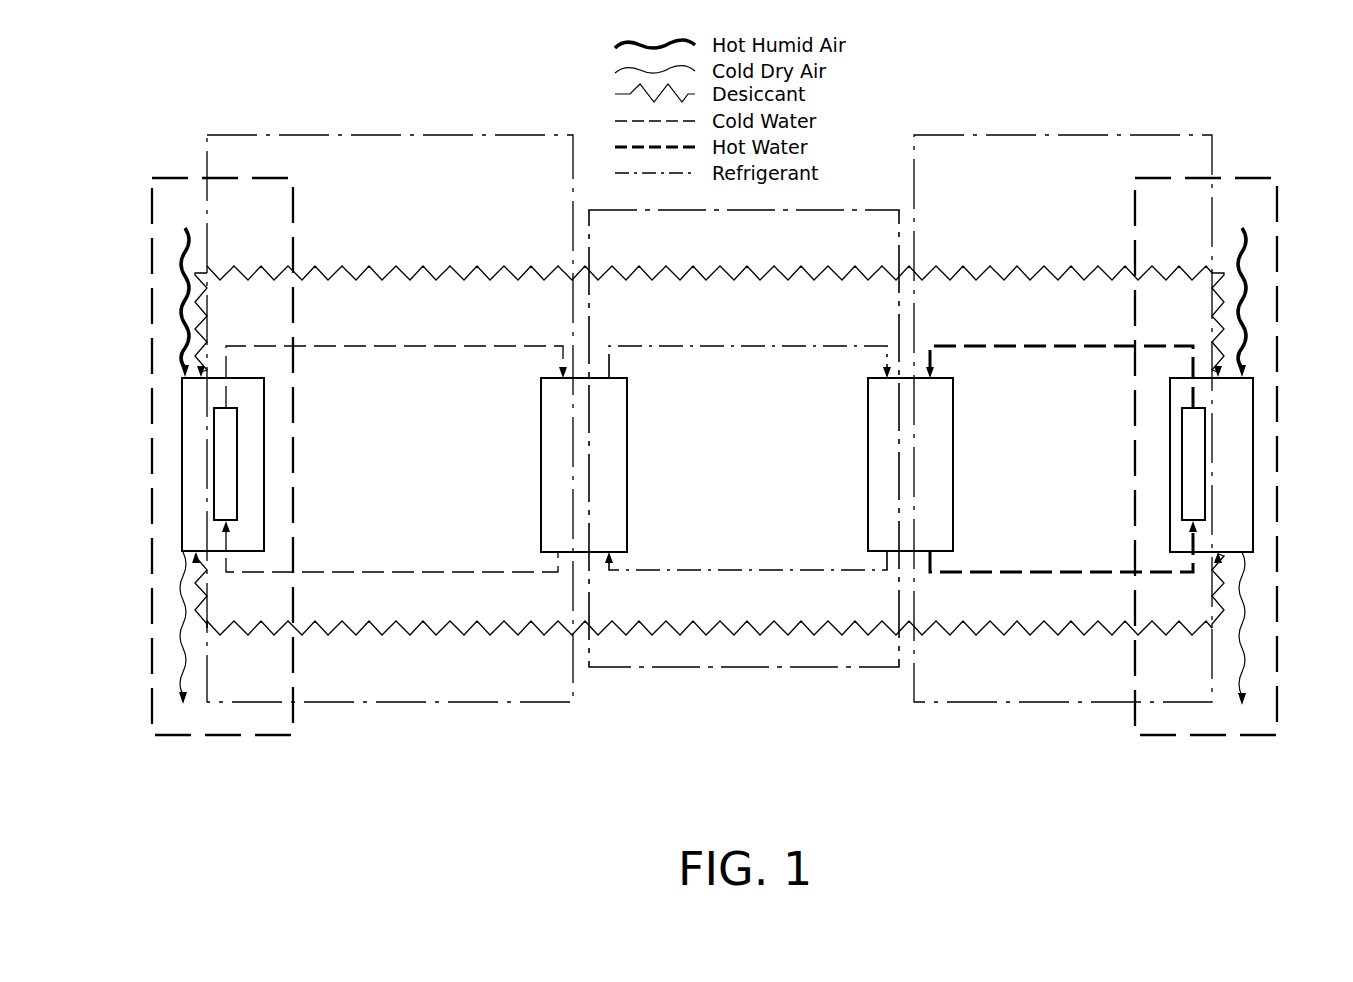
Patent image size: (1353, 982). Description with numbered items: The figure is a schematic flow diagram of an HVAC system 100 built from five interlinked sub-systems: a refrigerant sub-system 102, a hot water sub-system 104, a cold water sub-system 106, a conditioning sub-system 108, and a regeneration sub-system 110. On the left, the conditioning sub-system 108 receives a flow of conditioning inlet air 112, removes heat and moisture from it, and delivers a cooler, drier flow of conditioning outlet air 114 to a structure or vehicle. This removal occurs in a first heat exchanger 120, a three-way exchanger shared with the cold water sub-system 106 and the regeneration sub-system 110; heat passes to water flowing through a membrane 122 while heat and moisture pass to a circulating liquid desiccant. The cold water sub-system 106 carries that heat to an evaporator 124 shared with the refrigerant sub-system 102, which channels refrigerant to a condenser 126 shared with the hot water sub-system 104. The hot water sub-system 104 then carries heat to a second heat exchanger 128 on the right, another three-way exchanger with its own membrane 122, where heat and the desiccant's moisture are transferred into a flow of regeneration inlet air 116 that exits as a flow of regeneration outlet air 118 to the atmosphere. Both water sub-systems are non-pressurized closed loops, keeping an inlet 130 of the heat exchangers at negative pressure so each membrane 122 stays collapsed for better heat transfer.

The HVAC system 100 is at (447, 783).
The refrigerant sub-system 102 is at (743, 670).
The hot water sub-system 104 is at (1017, 705).
The cold water sub-system 106 is at (432, 705).
The conditioning sub-system 108 is at (207, 738).
The regeneration sub-system 110 is at (1200, 738).
The flow of conditioning inlet air 112 is at (183, 313).
The flow of conditioning outlet air 114 is at (183, 618).
The flow of regeneration inlet air 116 is at (1244, 300).
The flow of regeneration outlet air 118 is at (1243, 640).
The first heat exchanger 120 is at (190, 430).
The membrane 122 is at (225, 460).
The evaporator 124 is at (611, 521).
The condenser 126 is at (888, 521).
The second heat exchanger 128 is at (1255, 401).
The inlet 130 is at (228, 524).